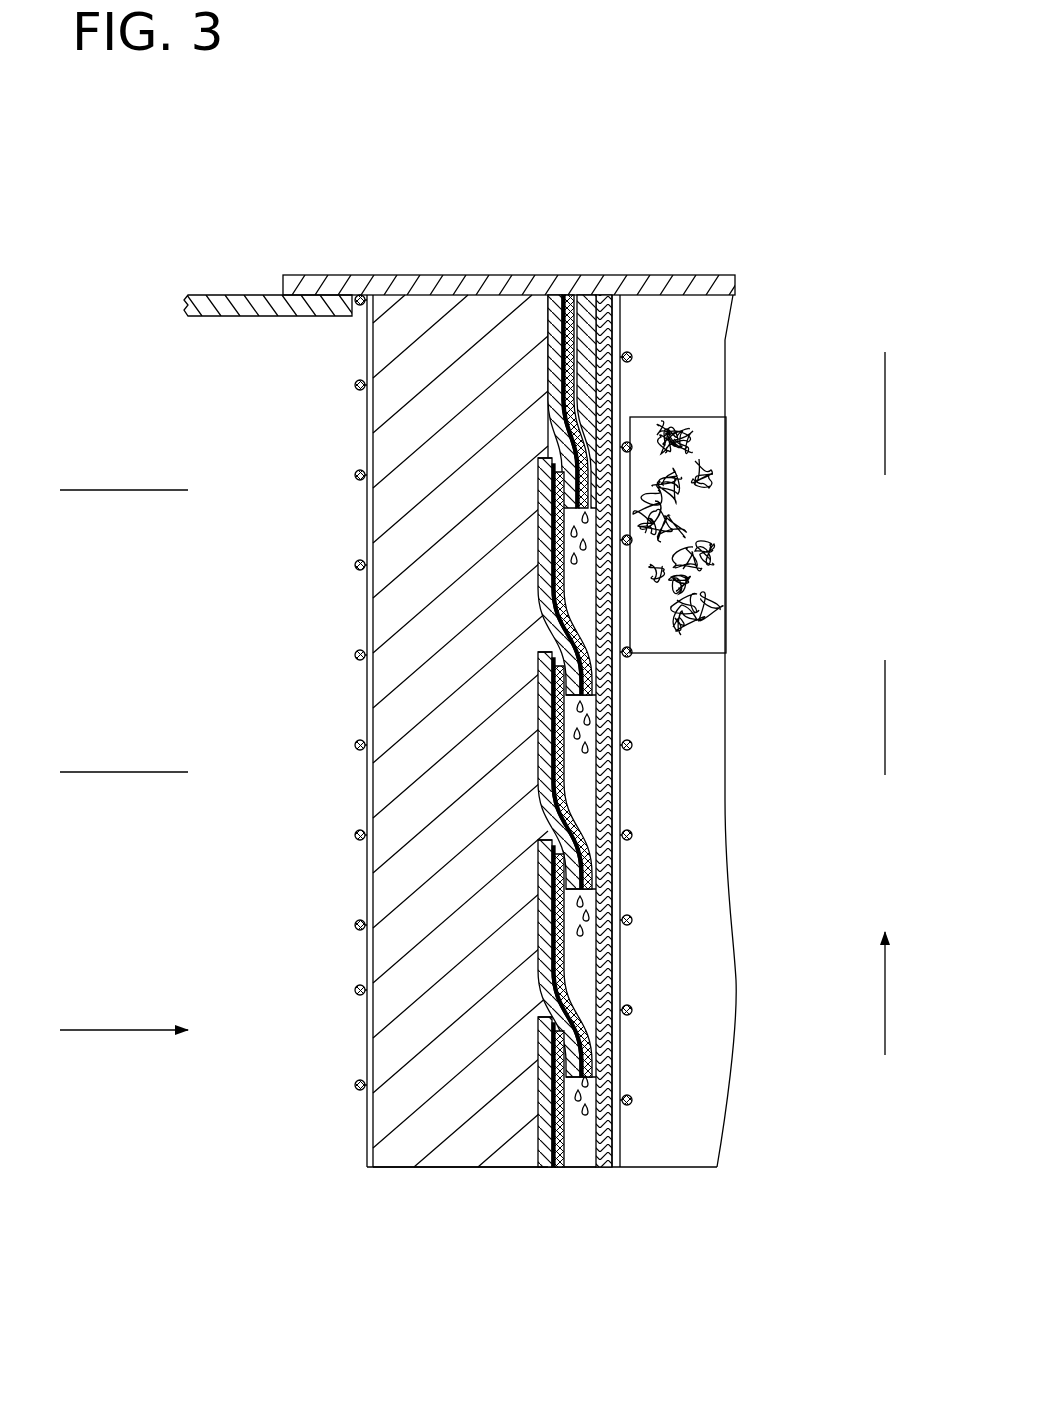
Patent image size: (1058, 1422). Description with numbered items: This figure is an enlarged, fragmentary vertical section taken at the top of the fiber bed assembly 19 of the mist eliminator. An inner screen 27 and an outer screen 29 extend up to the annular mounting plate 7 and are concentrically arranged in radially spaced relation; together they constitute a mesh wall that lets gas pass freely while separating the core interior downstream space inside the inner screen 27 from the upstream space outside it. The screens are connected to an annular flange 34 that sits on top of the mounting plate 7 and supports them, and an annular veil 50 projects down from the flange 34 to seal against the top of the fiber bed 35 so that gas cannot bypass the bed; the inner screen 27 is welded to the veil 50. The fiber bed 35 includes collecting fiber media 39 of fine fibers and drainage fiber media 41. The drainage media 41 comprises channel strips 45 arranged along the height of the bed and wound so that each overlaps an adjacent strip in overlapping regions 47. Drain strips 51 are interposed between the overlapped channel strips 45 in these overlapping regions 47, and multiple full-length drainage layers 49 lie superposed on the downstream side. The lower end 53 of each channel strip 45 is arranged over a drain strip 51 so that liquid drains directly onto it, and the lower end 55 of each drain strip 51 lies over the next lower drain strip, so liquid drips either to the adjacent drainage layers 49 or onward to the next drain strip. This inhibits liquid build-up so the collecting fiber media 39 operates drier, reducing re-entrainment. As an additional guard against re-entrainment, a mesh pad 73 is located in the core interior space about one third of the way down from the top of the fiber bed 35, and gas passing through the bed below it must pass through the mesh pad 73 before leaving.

The mounting plate 7 is at (205, 295).
The fiber bed assembly 19 is at (812, 213).
The inner screen 27 is at (627, 865).
The outer screen 29 is at (371, 1142).
The annular flange 34 is at (452, 276).
The fiber bed 35 is at (566, 1228).
The collecting fiber media 39 is at (446, 1170).
The drainage fiber media 41 is at (598, 1192).
The channel strips 45 is at (550, 332).
The overlapping regions 47 is at (546, 456).
The drainage layers 49 is at (586, 295).
The annular veil 50 is at (605, 338).
The drain strips 51 is at (548, 295).
The lower end of channel strip 53 is at (556, 537).
The lower end of drain strip 55 is at (586, 520).
The mesh pad 73 is at (705, 446).